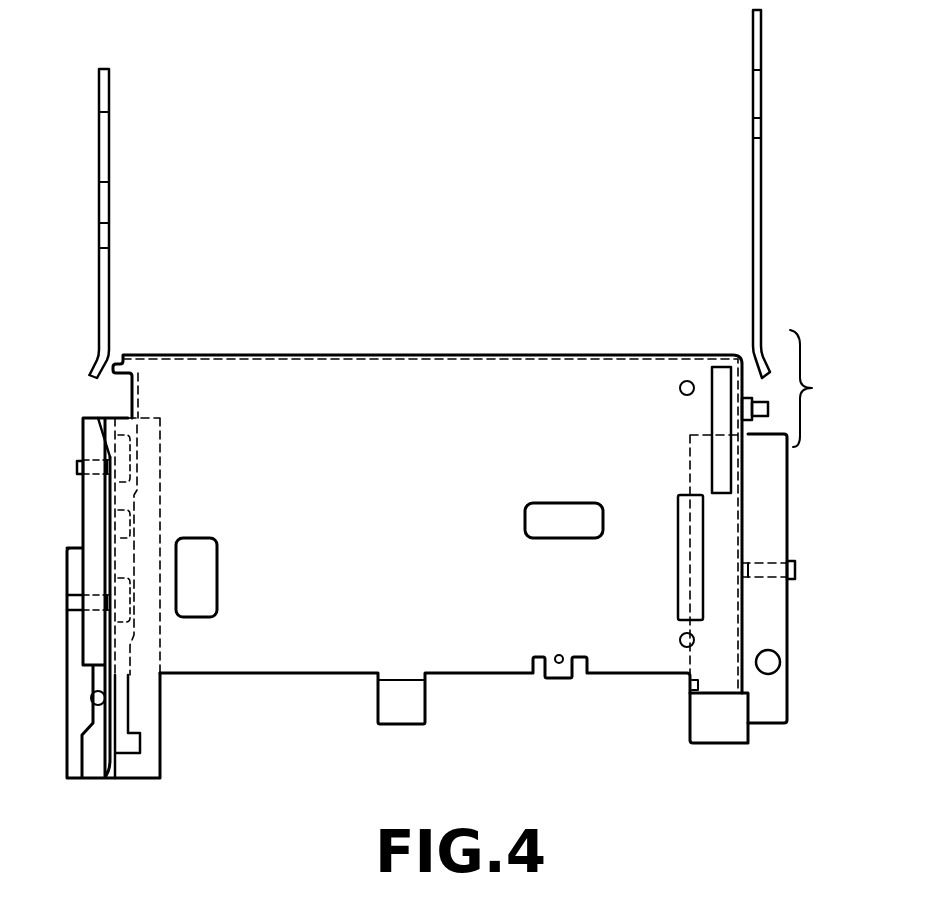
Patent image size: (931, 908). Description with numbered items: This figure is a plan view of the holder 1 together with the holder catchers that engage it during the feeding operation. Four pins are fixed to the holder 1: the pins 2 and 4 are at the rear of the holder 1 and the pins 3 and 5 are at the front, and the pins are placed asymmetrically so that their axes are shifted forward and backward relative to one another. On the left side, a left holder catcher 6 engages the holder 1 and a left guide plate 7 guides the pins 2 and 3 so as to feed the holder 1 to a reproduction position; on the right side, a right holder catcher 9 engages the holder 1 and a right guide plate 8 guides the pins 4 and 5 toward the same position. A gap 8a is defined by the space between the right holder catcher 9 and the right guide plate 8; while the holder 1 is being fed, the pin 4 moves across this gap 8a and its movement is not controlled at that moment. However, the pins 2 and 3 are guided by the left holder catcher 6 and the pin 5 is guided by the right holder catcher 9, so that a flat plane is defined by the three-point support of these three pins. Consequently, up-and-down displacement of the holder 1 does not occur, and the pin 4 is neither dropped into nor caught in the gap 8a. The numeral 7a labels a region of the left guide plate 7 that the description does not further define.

The holder 1 is at (320, 366).
The pin 2 is at (77, 466).
The pin 3 is at (78, 605).
The pin 4 is at (770, 403).
The pin 5 is at (768, 578).
The left holder catcher 6 is at (137, 770).
The left guide plate 7 is at (99, 169).
The bent portion of left arm 7a is at (97, 408).
The right guide plate 8 is at (761, 107).
The gap 8a is at (831, 388).
The right holder catcher 9 is at (723, 733).